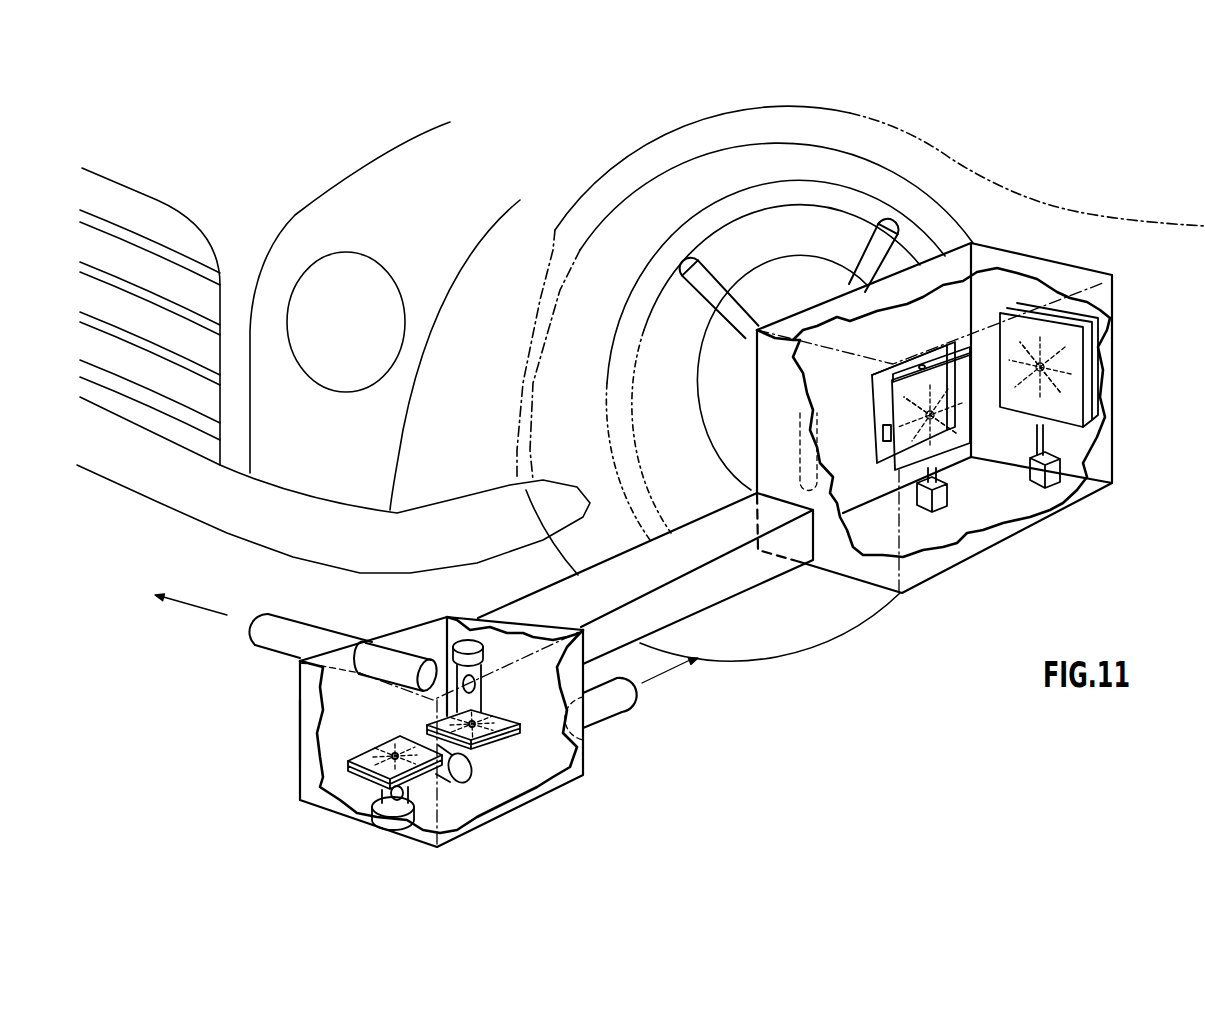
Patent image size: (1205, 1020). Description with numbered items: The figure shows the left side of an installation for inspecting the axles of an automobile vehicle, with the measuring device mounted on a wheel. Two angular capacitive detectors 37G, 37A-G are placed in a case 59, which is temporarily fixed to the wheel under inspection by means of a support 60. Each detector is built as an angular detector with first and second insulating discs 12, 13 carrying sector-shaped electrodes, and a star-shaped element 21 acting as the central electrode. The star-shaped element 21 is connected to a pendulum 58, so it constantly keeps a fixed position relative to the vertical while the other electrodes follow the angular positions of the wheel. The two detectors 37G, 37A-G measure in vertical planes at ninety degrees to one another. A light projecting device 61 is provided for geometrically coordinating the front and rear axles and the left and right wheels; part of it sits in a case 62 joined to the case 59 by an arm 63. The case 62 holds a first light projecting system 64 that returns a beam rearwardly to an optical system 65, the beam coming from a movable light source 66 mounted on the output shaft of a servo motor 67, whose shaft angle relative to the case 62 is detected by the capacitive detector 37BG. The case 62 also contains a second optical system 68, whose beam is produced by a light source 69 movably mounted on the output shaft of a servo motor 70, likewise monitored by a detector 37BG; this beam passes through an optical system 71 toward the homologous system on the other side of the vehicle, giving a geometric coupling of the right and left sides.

The first insulating disc 12 is at (873, 425).
The second insulating disc 13 is at (908, 462).
The star-shaped element 21 is at (1003, 327).
The capacitive detector 37G is at (1070, 392).
The capacitive detector 37A-G is at (950, 438).
The capacitive detector 37BG is at (367, 752).
The pendulum 58 is at (922, 496).
The case 59 is at (1104, 306).
The support 60 is at (717, 287).
The light projecting device 61 is at (293, 777).
The case 62 is at (317, 802).
The arm 63 is at (737, 579).
The first light projecting system 64 is at (406, 834).
The optical system 65 is at (631, 699).
The movable light source 66 is at (403, 790).
The servo motor 67 is at (380, 822).
The second optical system 68 is at (416, 645).
The light source 69 is at (478, 684).
The servo motor 70 is at (496, 641).
The optical system 71 is at (312, 640).